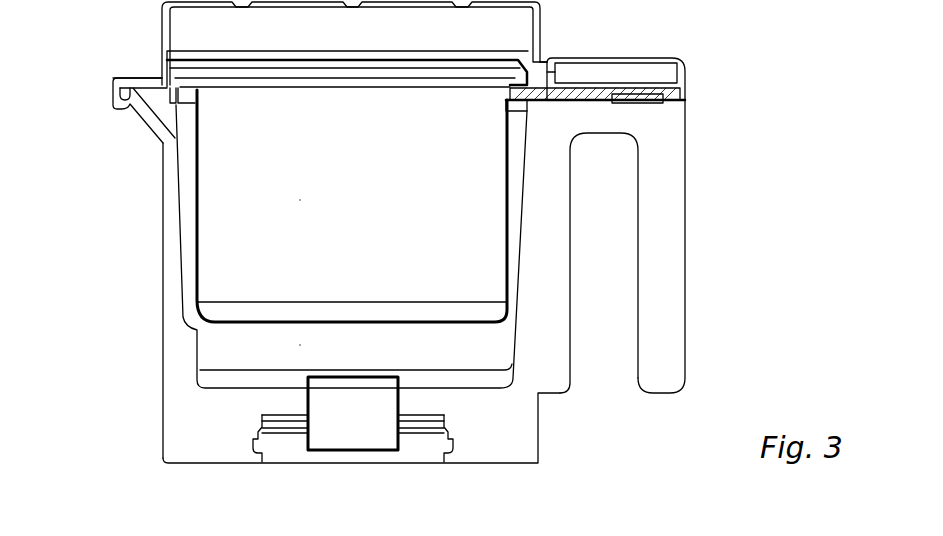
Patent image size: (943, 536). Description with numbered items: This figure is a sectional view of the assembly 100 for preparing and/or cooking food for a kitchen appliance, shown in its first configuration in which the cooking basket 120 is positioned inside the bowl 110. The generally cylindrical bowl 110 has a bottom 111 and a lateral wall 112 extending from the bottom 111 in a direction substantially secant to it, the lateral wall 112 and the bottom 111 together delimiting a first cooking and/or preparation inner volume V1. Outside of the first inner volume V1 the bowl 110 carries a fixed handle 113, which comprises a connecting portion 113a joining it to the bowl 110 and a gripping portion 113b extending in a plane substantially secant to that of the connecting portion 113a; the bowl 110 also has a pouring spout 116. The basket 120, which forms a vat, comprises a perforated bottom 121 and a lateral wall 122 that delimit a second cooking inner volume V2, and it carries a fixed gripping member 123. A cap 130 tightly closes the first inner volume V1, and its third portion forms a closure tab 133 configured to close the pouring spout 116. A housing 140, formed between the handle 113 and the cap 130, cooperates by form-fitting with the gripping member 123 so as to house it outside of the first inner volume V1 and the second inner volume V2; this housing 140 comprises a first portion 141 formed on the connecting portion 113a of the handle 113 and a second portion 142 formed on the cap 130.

The assembly 100 is at (185, 485).
The bowl 110 is at (552, 420).
The bottom 111 is at (190, 438).
The lateral wall 112 is at (162, 228).
The fixed handle 113 is at (708, 242).
The connecting portion 113a is at (607, 128).
The gripping portion 113b is at (665, 216).
The pouring spout 116 is at (143, 118).
The cooking basket 120 is at (152, 308).
The perforated bottom 121 is at (228, 330).
The lateral wall 122 is at (182, 270).
The fixed gripping member 123 is at (588, 95).
The cap 130 is at (166, 24).
The closure tab 133 is at (130, 82).
The housing 140 is at (672, 80).
The first portion of the housing 141 is at (667, 101).
The second portion of the housing 142 is at (640, 73).
The first cooking and/or preparation inner volume V1 is at (240, 350).
The second cooking inner volume V2 is at (232, 155).